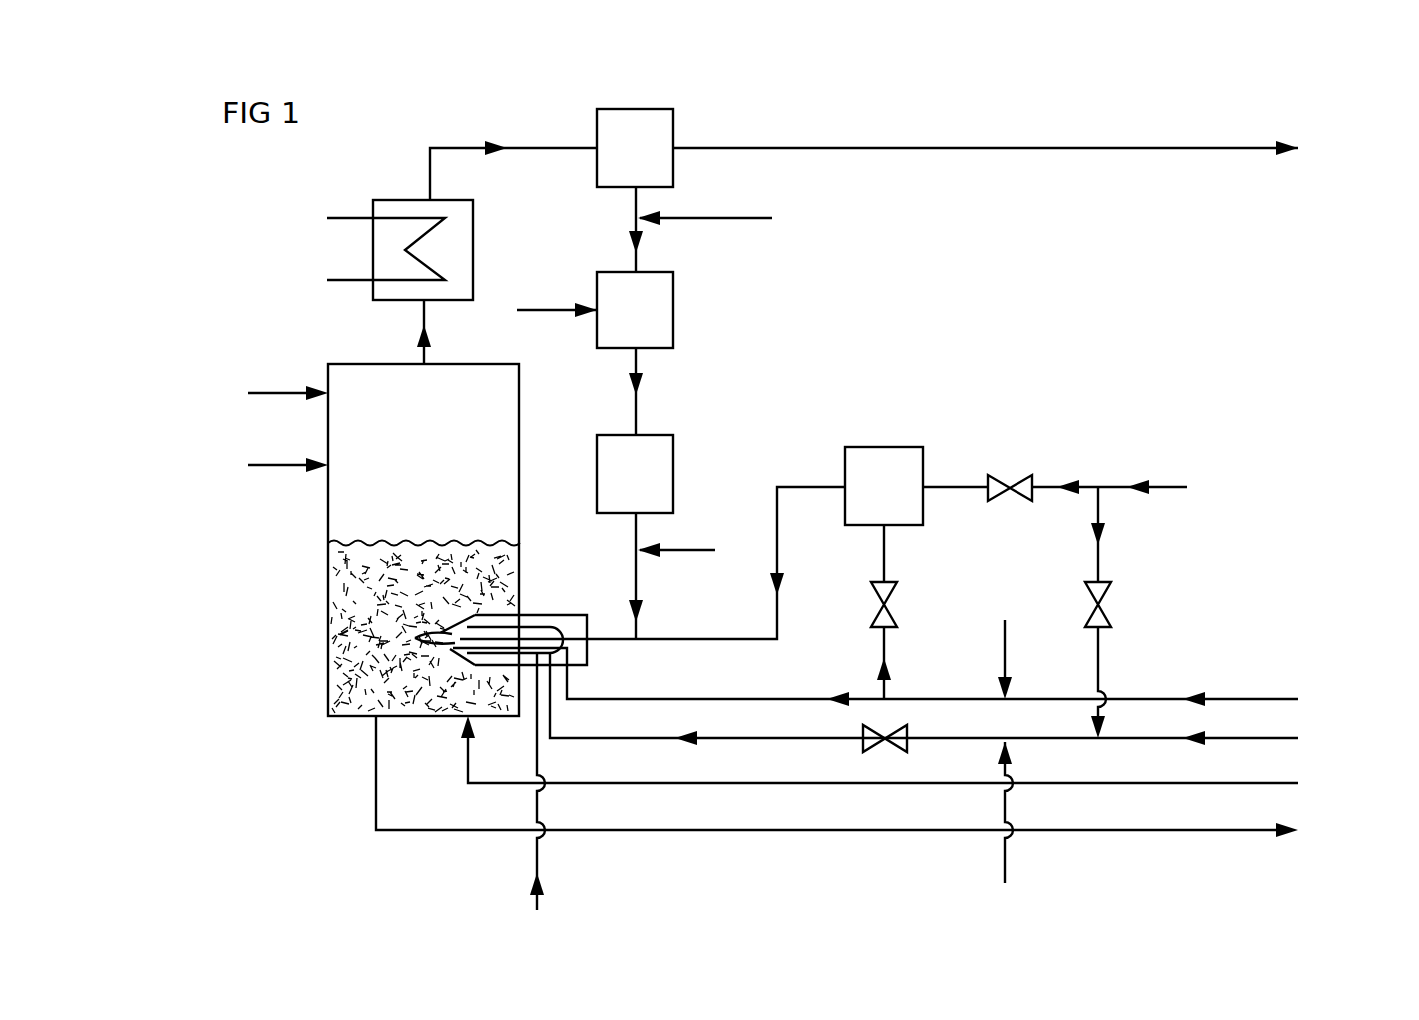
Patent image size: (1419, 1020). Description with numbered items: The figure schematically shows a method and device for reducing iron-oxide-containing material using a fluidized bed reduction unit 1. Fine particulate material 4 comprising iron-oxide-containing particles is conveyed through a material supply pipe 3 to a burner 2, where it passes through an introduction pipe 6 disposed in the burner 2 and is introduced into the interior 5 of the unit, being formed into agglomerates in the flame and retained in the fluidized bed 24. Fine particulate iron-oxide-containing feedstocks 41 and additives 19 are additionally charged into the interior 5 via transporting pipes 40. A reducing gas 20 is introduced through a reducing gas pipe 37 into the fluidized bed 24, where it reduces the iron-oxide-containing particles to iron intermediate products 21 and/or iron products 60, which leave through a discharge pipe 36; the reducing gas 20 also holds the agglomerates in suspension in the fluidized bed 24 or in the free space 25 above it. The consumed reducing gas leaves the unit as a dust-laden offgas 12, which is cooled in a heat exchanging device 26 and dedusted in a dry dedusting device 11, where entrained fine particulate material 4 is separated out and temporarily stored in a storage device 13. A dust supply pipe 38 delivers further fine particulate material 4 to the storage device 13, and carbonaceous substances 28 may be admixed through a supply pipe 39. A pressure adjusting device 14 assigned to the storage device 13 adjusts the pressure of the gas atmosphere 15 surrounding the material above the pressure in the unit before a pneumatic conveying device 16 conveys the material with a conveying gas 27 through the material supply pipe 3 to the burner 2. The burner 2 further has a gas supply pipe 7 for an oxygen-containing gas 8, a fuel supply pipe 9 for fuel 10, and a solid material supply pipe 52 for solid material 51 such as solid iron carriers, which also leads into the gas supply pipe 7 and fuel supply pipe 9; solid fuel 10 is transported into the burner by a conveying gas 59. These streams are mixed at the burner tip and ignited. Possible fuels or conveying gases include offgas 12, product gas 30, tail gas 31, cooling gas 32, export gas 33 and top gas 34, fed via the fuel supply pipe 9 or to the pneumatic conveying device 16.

The fluidized bed reduction unit 1 is at (326, 688).
The burner 2 is at (590, 655).
The material supply pipe 3 is at (632, 578).
The fine particulate material 4 is at (632, 243).
The interior 5 is at (433, 466).
The introduction pipe 6 is at (573, 633).
The gas supply pipe 7 is at (797, 697).
The oxygen-containing gas 8 is at (918, 653).
The fuel supply pipe 9 is at (758, 737).
The fuel 10 is at (1068, 485).
The dry dedusting device 11 is at (673, 128).
The offgas 12 is at (494, 146).
The storage device 13 is at (673, 308).
The pressure adjusting device 14 is at (658, 434).
The gas atmosphere 15 is at (673, 475).
The pneumatic conveying device 16 is at (885, 446).
The additives 19 is at (273, 467).
The reducing gas 20 is at (898, 757).
The iron intermediate products 21 is at (859, 781).
The fluidized bed 24 is at (333, 648).
The free space 25 is at (335, 505).
The heat exchanging device 26 is at (405, 199).
The conveying gas 27 is at (780, 592).
The carbonaceous substances 28 is at (790, 218).
The product gas 30 is at (1149, 477).
The tail gas 31 is at (1288, 477).
The cooling gas 32 is at (1212, 508).
The export gas 33 is at (1250, 508).
The top gas 34 is at (1284, 508).
The discharge pipe 36 is at (873, 832).
The reducing gas pipe 37 is at (795, 785).
The dust supply pipe 38 is at (545, 309).
The supply pipe 39 is at (738, 217).
The transporting pipes 40 is at (278, 392).
The fine particulate iron-oxide-containing feedstocks 41 is at (274, 395).
The solid material 51 is at (540, 885).
The solid material supply pipe 52 is at (1007, 640).
The conveying gas 59 is at (1103, 544).
The iron products 60 is at (1364, 830).